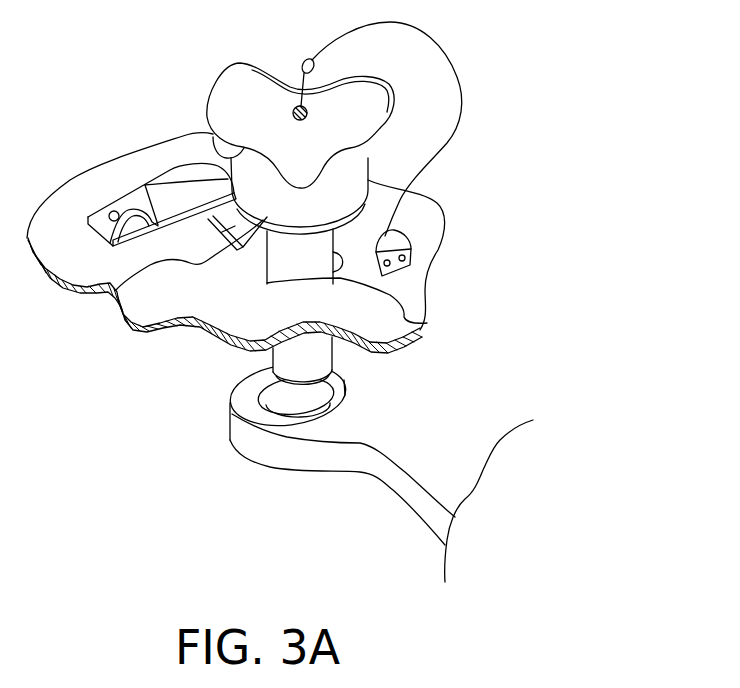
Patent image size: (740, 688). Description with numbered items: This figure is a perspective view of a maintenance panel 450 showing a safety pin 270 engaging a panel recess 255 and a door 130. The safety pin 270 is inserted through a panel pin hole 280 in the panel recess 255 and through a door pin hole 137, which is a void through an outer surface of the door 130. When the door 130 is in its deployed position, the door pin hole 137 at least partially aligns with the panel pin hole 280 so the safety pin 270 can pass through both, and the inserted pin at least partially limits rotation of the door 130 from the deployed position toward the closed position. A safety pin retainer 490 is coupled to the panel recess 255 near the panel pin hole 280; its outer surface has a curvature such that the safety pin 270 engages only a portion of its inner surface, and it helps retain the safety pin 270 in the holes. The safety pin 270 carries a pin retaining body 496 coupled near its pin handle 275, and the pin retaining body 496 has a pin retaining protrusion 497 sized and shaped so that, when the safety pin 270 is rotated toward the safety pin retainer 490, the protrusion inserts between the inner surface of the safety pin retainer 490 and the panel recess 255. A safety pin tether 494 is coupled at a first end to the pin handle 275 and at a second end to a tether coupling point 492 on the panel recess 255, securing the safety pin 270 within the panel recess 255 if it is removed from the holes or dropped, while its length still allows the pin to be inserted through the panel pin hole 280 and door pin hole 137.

The door 130 is at (448, 414).
The door pin hole 137 is at (307, 404).
The panel recess 255 is at (264, 317).
The safety pin 270 is at (277, 362).
The pin handle 275 is at (233, 82).
The panel pin hole 280 is at (428, 323).
The maintenance panel 450 is at (524, 160).
The safety pin retainer 490 is at (143, 187).
The tether coupling point 492 is at (412, 260).
The safety pin tether 494 is at (457, 72).
The pin retaining body 496 is at (213, 136).
The pin retaining protrusion 497 is at (116, 291).